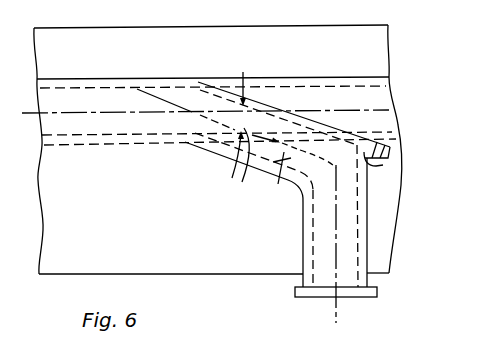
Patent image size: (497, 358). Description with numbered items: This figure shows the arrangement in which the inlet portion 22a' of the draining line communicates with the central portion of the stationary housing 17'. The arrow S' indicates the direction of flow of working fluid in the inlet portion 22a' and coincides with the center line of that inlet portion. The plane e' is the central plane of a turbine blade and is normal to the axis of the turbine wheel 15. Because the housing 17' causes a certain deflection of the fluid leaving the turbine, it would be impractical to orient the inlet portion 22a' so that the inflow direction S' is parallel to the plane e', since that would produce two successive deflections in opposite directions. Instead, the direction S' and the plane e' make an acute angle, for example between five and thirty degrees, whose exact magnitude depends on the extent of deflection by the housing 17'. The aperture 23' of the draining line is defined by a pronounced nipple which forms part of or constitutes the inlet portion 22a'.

The turbine wheel 15 is at (393, 137).
The stationary housing 17' is at (212, 151).
The aperture 23' is at (290, 197).
The inlet portion of the draining line 22a' is at (249, 175).
The direction of flow S' is at (231, 174).
The central plane of a turbine blade e' is at (418, 90).